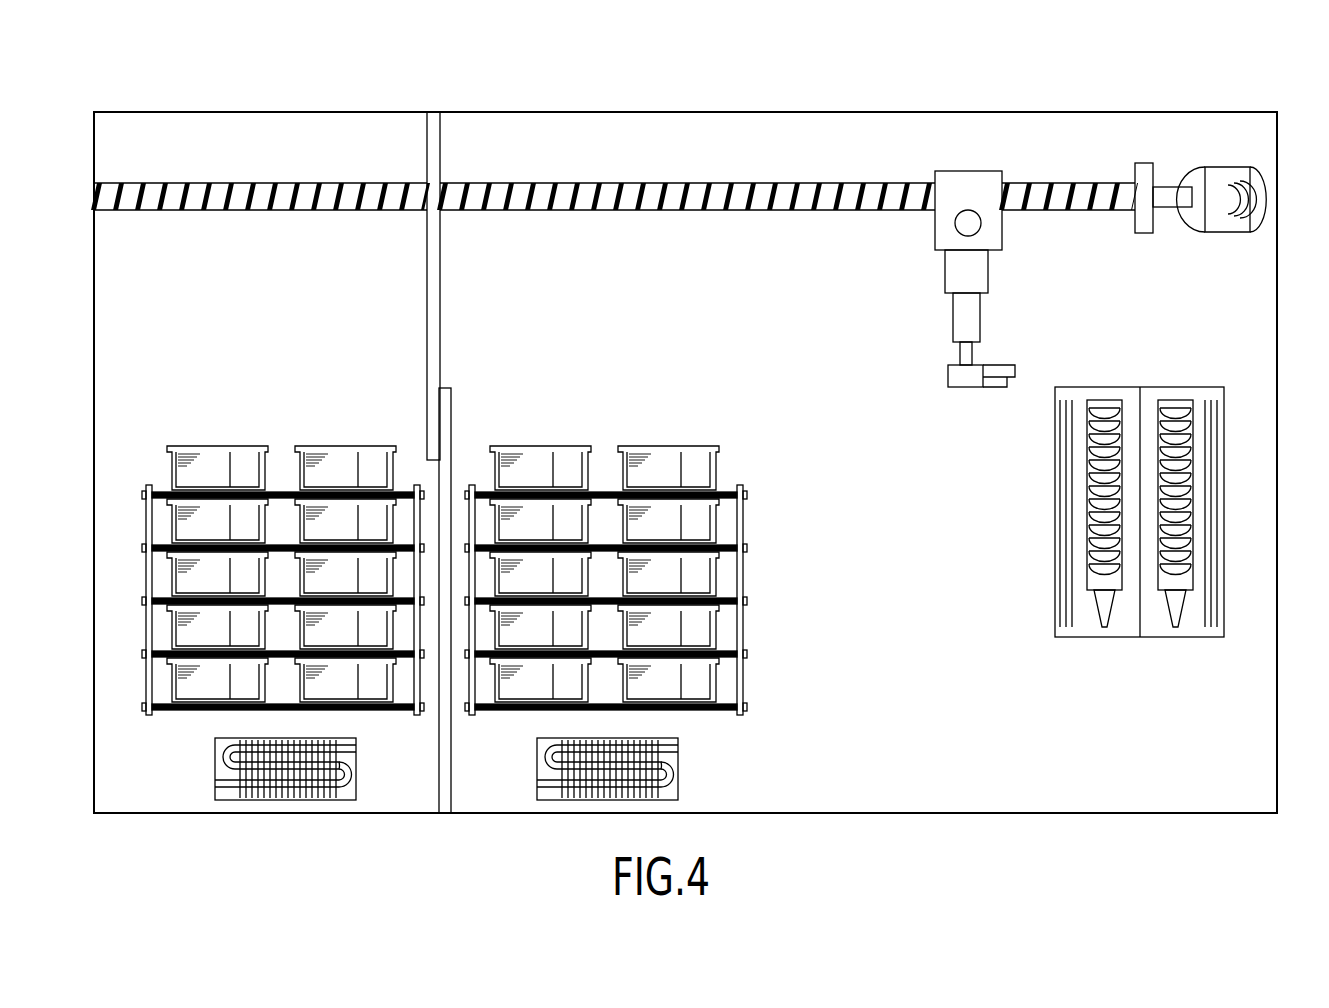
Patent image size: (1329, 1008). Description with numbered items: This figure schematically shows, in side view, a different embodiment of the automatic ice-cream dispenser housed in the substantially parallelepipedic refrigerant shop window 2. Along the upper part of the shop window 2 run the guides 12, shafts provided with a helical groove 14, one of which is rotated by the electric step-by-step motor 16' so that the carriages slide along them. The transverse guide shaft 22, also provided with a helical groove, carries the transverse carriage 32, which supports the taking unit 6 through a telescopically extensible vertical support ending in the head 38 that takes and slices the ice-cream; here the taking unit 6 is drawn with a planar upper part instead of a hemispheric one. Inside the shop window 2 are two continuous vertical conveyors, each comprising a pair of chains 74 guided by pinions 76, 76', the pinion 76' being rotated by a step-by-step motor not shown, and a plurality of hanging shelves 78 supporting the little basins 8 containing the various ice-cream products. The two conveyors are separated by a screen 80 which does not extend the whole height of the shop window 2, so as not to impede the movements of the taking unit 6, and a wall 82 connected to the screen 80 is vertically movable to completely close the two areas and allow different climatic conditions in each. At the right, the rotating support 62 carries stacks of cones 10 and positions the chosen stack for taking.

The refrigerant shop window 2 is at (552, 110).
The taking unit 6 is at (940, 277).
The little basins 8 is at (716, 469).
The cones 10 is at (1182, 610).
The guides 12 is at (639, 183).
The helical groove 14 is at (712, 195).
The electric step-by-step motor 16' is at (1200, 178).
The transverse guide shaft 22 is at (978, 232).
The transverse carriage 32 is at (948, 168).
The head 38 is at (972, 388).
The rotating support 62 is at (1224, 535).
The chains 74 is at (741, 575).
The pinion 76 is at (639, 511).
The driven pinion 76' is at (642, 677).
The hanging shelves 78 is at (700, 711).
The screen 80 is at (455, 762).
The wall 82 is at (442, 297).